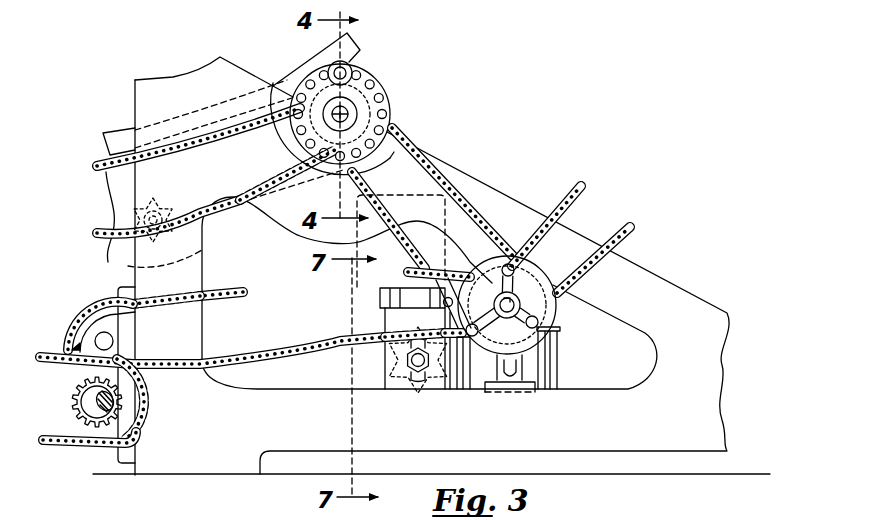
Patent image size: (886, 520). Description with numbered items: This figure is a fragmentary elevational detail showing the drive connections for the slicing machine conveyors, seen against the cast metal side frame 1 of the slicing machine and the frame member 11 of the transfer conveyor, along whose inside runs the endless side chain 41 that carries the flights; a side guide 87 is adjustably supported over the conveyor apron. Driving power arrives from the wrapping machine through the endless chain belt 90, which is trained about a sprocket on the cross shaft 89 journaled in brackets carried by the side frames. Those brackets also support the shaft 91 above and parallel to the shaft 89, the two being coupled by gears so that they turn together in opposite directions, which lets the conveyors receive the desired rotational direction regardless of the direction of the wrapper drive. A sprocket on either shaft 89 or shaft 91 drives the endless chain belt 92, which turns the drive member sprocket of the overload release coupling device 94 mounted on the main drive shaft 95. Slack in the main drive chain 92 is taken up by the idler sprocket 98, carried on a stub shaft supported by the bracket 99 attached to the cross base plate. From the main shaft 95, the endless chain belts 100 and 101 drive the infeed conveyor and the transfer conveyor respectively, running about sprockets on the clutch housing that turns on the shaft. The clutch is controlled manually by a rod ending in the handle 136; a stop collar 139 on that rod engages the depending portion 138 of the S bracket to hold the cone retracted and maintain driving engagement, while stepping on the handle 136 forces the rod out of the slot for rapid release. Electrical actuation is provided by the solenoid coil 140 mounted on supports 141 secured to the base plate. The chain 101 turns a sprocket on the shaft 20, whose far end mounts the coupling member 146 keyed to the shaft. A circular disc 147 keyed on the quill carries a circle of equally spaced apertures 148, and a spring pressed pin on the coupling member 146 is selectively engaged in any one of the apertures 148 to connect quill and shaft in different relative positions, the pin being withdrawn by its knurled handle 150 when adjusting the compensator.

The side frame 1 is at (700, 309).
The frame member 11 is at (112, 258).
The shaft 20 is at (360, 110).
The side chain 41 is at (101, 163).
The side guide 87 is at (113, 132).
The cross shaft 89 is at (95, 402).
The endless chain belt 90 is at (53, 448).
The shaft 91 is at (107, 340).
The endless chain belt 92 is at (247, 354).
The coupling device 94 is at (517, 284).
The main drive shaft 95 is at (553, 318).
The idler sprocket 98 is at (433, 386).
The bracket 99 is at (386, 375).
The endless chain belt 100 is at (628, 234).
The endless chain belt 101 is at (470, 200).
The handle 136 is at (527, 382).
The depending portion 138 is at (520, 362).
The stop collar 139 is at (507, 388).
The solenoid coil 140 is at (382, 291).
The supports 141 is at (388, 300).
The coupling member 146 is at (352, 118).
The circular disc 147 is at (351, 104).
The apertures 148 is at (300, 96).
The knurled handle 150 is at (347, 68).